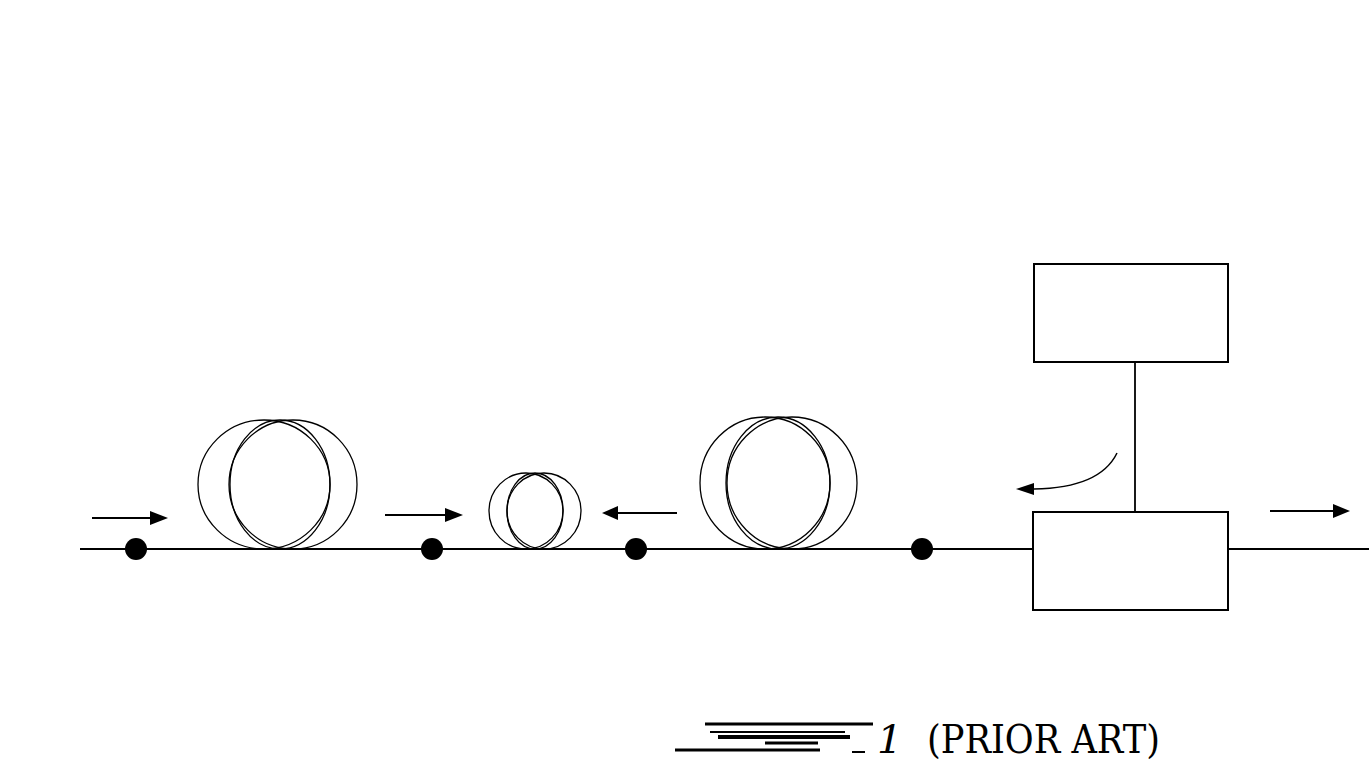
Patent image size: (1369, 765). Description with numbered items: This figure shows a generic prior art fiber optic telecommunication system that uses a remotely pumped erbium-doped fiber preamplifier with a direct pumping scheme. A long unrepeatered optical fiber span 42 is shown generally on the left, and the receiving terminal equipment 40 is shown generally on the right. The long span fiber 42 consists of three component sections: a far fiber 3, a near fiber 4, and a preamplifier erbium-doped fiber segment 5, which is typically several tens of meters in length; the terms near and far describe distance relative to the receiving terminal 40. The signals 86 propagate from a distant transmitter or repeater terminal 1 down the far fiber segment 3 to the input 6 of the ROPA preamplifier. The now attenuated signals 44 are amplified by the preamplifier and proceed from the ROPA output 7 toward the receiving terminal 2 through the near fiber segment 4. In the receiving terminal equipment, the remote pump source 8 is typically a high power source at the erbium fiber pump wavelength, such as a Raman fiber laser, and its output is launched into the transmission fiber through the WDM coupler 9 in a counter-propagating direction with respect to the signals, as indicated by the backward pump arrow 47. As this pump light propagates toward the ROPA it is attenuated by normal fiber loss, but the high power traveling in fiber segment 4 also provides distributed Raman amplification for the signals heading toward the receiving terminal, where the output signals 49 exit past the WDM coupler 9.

The distant transmitter or repeater terminal 1 is at (138, 560).
The receiving terminal 2 is at (922, 561).
The far fiber 3 is at (318, 421).
The near fiber 4 is at (761, 417).
The preamplifier erbium-doped fiber segment 5 is at (541, 473).
The input of the ROPA preamplifier 6 is at (432, 561).
The ROPA output 7 is at (636, 561).
The remote pump source 8 is at (1033, 300).
The WDM coupler 9 is at (1105, 612).
The receiving terminal equipment 40 is at (724, 383).
The long unrepeatered optical fiber span 42 is at (510, 376).
The attenuated signals 44 is at (409, 463).
The counter-propagating pump light 47 is at (637, 511).
The output signals 49 is at (1293, 462).
The signals 86 is at (116, 465).